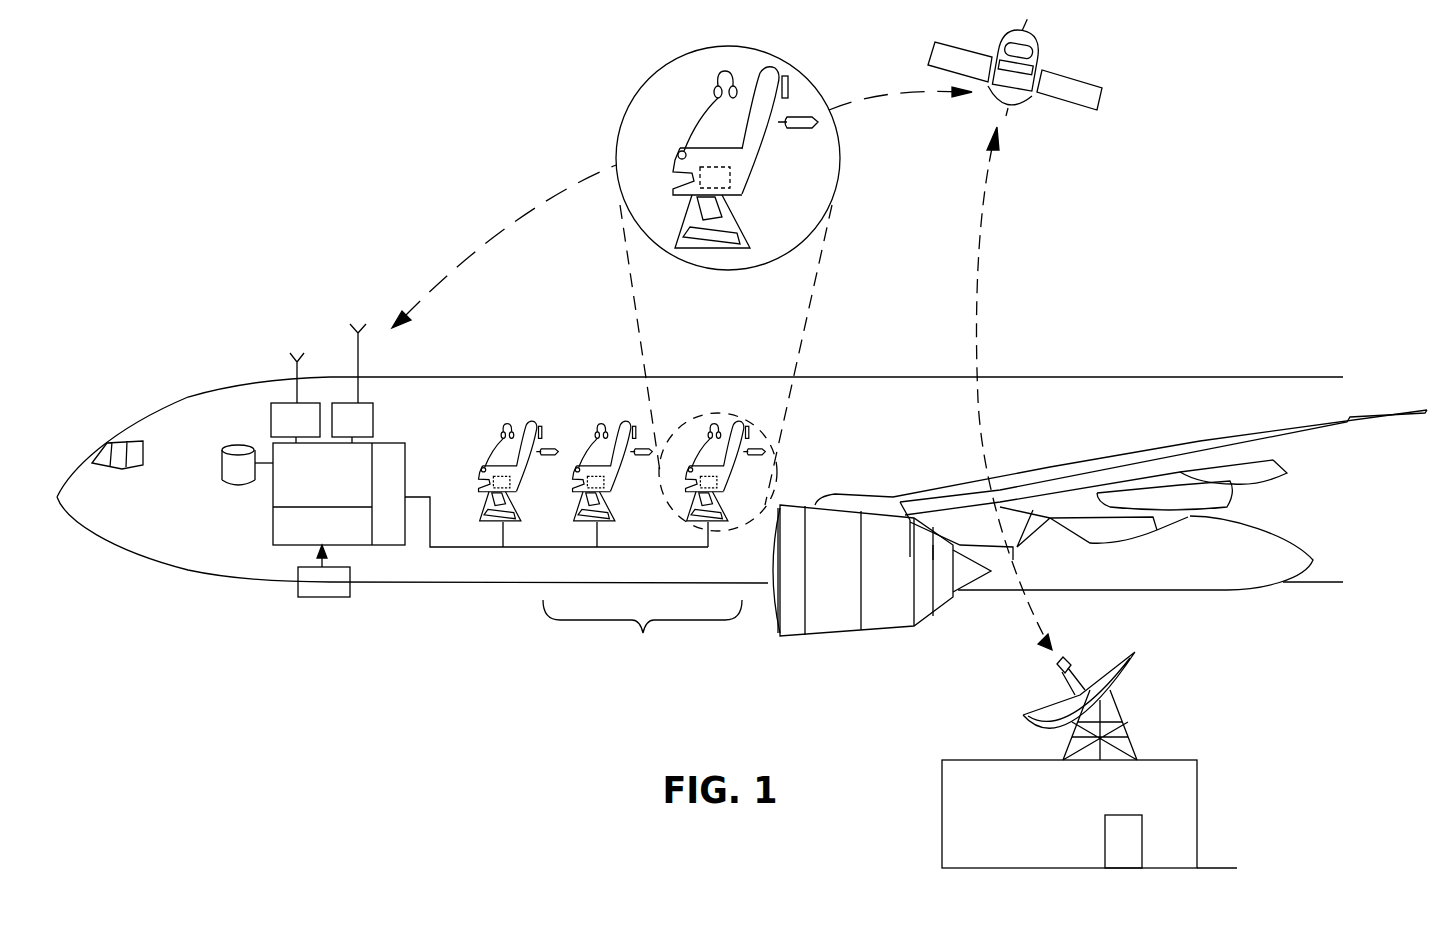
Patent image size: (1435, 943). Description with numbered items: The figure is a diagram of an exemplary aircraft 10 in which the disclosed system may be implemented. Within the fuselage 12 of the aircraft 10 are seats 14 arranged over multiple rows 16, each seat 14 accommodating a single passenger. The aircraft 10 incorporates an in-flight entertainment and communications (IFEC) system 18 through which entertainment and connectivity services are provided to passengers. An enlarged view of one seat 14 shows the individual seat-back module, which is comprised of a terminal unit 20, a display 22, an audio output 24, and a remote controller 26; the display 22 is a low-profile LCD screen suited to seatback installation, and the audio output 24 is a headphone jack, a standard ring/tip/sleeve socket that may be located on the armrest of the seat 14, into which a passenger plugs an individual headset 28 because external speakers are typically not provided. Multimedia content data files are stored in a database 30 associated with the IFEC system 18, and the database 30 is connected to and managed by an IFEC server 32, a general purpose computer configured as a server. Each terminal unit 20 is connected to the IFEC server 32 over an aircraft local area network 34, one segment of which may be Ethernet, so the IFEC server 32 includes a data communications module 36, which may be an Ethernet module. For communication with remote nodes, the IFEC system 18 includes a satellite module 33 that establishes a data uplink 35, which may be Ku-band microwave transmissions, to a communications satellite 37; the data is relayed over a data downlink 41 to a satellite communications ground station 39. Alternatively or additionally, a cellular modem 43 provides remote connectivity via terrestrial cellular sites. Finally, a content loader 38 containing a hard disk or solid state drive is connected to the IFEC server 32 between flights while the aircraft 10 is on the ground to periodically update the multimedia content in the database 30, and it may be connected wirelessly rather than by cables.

The aircraft 10 is at (1027, 359).
The fuselage 12 is at (700, 483).
The seat 14 is at (620, 430).
The row 16 is at (628, 536).
The in-flight entertainment and communications (IFEC) system 18 is at (258, 368).
The terminal unit 20 is at (729, 157).
The display 22 is at (789, 91).
The audio output 24 is at (679, 155).
The remote controller 26 is at (792, 129).
The headset 28 is at (714, 92).
The database 30 is at (238, 444).
The IFEC server 32 is at (248, 492).
The satellite module 33 is at (362, 398).
The aircraft local area network 34 is at (575, 548).
The data uplink 35 is at (518, 218).
The data communications module 36 is at (407, 470).
The communications satellite 37 is at (1030, 100).
The content loader 38 is at (323, 598).
The satellite communications ground station 39 is at (1013, 838).
The data downlink 41 is at (978, 245).
The cellular modem 43 is at (308, 398).